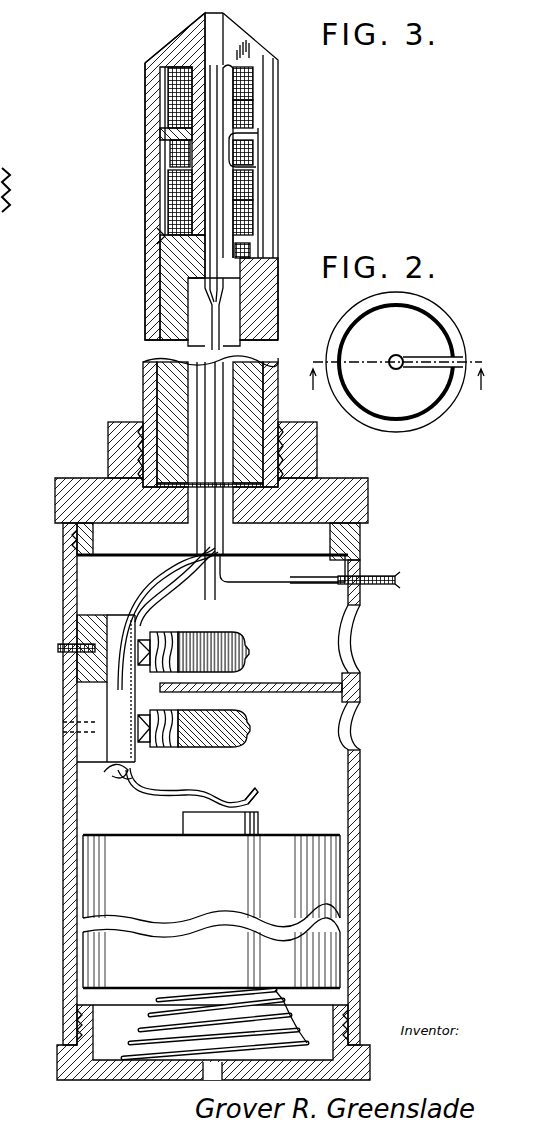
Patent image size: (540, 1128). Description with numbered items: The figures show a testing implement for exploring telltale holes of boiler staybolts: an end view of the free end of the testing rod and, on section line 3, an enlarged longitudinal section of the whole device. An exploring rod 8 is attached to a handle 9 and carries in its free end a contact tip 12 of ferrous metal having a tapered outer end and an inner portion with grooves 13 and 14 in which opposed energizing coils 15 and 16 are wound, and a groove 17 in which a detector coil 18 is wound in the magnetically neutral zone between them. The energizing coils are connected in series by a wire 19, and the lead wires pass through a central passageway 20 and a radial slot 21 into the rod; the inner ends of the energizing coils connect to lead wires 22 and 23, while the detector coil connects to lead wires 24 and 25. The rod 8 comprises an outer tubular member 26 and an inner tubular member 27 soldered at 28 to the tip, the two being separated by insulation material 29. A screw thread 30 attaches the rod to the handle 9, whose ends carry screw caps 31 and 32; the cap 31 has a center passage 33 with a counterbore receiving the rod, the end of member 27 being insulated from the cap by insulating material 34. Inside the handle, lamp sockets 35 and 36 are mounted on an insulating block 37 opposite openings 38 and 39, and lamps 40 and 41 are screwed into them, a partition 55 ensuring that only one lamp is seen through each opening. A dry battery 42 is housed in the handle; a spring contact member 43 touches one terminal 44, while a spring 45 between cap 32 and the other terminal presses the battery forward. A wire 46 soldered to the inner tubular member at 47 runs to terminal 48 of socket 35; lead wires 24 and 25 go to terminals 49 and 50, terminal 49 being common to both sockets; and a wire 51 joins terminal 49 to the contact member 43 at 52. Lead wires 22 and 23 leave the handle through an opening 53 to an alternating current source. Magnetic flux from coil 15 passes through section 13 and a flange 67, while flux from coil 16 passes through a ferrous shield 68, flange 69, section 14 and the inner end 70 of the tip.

In FIG. 2, the section line 3 is at (396, 392).
In FIG. 3, the exploring rod 8 is at (135, 233).
In FIG. 3, the handle 9 is at (363, 833).
In FIG. 3, the contact tip 12 is at (245, 50).
In FIG. 2, the contact tip 12 is at (380, 408).
In FIG. 3, the groove 13 is at (240, 95).
In FIG. 3, the groove 14 is at (250, 217).
In FIG. 3, the energizing coil 15 is at (250, 110).
In FIG. 3, the energizing coil 16 is at (247, 190).
In FIG. 3, the groove 17 is at (172, 148).
In FIG. 3, the detector coil 18 is at (175, 162).
In FIG. 3, the wire 19 is at (258, 150).
In FIG. 3, the central passageway 20 is at (212, 33).
In FIG. 2, the central passageway 20 is at (402, 357).
In FIG. 2, the slot 21 is at (440, 352).
In FIG. 3, the lead wire 22 is at (217, 298).
In FIG. 3, the lead wire 23 is at (223, 307).
In FIG. 3, the lead wire 24 is at (190, 400).
In FIG. 3, the lead wire 25 is at (205, 380).
In FIG. 3, the outer tubular member 26 is at (157, 300).
In FIG. 2, the outer tubular member 26 is at (401, 432).
In FIG. 3, the inner tubular member 27 is at (170, 323).
In FIG. 3, the solder joint 28 is at (178, 268).
In FIG. 3, the insulation material 29 is at (262, 325).
In FIG. 2, the insulation material 29 is at (428, 420).
In FIG. 3, the screw thread 30 is at (140, 443).
In FIG. 3, the screw cap 31 is at (65, 500).
In FIG. 3, the screw cap 32 is at (100, 1082).
In FIG. 3, the center passage 33 is at (250, 517).
In FIG. 3, the insulating material 34 is at (150, 487).
In FIG. 3, the lamp socket 35 is at (173, 630).
In FIG. 3, the lamp socket 36 is at (177, 750).
In FIG. 3, the insulating block 37 is at (85, 697).
In FIG. 3, the opening 38 is at (350, 648).
In FIG. 3, the opening 39 is at (352, 725).
In FIG. 3, the lamp 40 is at (225, 643).
In FIG. 3, the lamp 41 is at (245, 720).
In FIG. 3, the dry battery 42 is at (100, 858).
In FIG. 3, the spring contact member 43 is at (252, 790).
In FIG. 3, the battery terminal 44 is at (252, 823).
In FIG. 3, the spring 45 is at (178, 1055).
In FIG. 3, the wire 46 is at (178, 562).
In FIG. 3, the solder joint 47 is at (216, 541).
In FIG. 3, the socket terminal 48 is at (137, 623).
In FIG. 3, the socket terminal 49 is at (137, 692).
In FIG. 3, the socket terminal 50 is at (133, 755).
In FIG. 3, the wire 51 is at (117, 778).
In FIG. 3, the solder joint 52 is at (128, 782).
In FIG. 3, the opening 53 is at (358, 572).
In FIG. 3, the partition 55 is at (262, 683).
In FIG. 3, the flange 67 is at (258, 135).
In FIG. 3, the shield 68 is at (160, 236).
In FIG. 3, the flange 69 is at (250, 165).
In FIG. 3, the inner end 70 is at (250, 253).